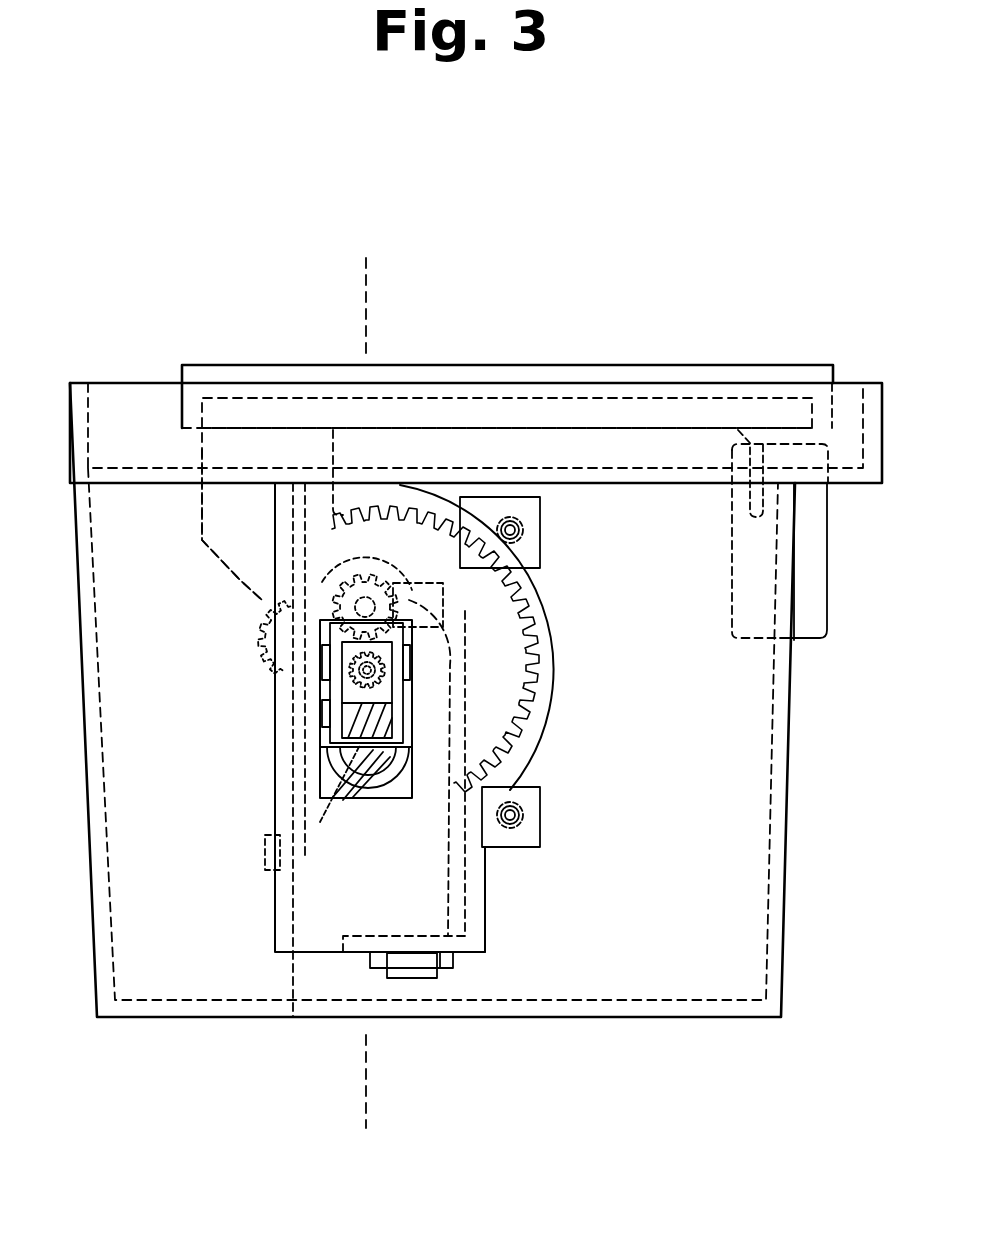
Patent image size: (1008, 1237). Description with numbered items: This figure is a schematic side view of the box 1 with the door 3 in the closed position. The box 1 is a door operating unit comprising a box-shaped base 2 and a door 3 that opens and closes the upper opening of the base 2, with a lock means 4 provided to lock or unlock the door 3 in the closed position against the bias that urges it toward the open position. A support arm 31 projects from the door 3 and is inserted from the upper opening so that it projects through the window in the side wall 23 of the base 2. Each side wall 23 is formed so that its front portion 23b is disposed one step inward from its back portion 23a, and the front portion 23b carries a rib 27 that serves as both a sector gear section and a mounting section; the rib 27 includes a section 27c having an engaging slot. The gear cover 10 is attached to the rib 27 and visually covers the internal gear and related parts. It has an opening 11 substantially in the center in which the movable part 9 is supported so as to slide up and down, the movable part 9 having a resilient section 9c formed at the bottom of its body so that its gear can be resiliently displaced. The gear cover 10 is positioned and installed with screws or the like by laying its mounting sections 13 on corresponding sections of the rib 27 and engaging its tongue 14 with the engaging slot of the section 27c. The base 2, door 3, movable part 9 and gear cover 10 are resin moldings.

The box 1 is at (519, 406).
The box-shaped base 2 is at (857, 378).
The door 3 is at (510, 356).
The lock means 4 is at (372, 274).
The movable part 9 is at (320, 712).
The resilient section 9c is at (320, 762).
The gear cover 10 is at (494, 914).
The opening 11 is at (320, 783).
The mounting sections 13 is at (535, 563).
The tongue 14 is at (417, 978).
The side wall 23 is at (476, 756).
The back portion 23a is at (180, 982).
The front portion 23b is at (648, 967).
The rib 27 is at (477, 880).
The section 27c is at (457, 960).
The support arm 31 is at (203, 450).